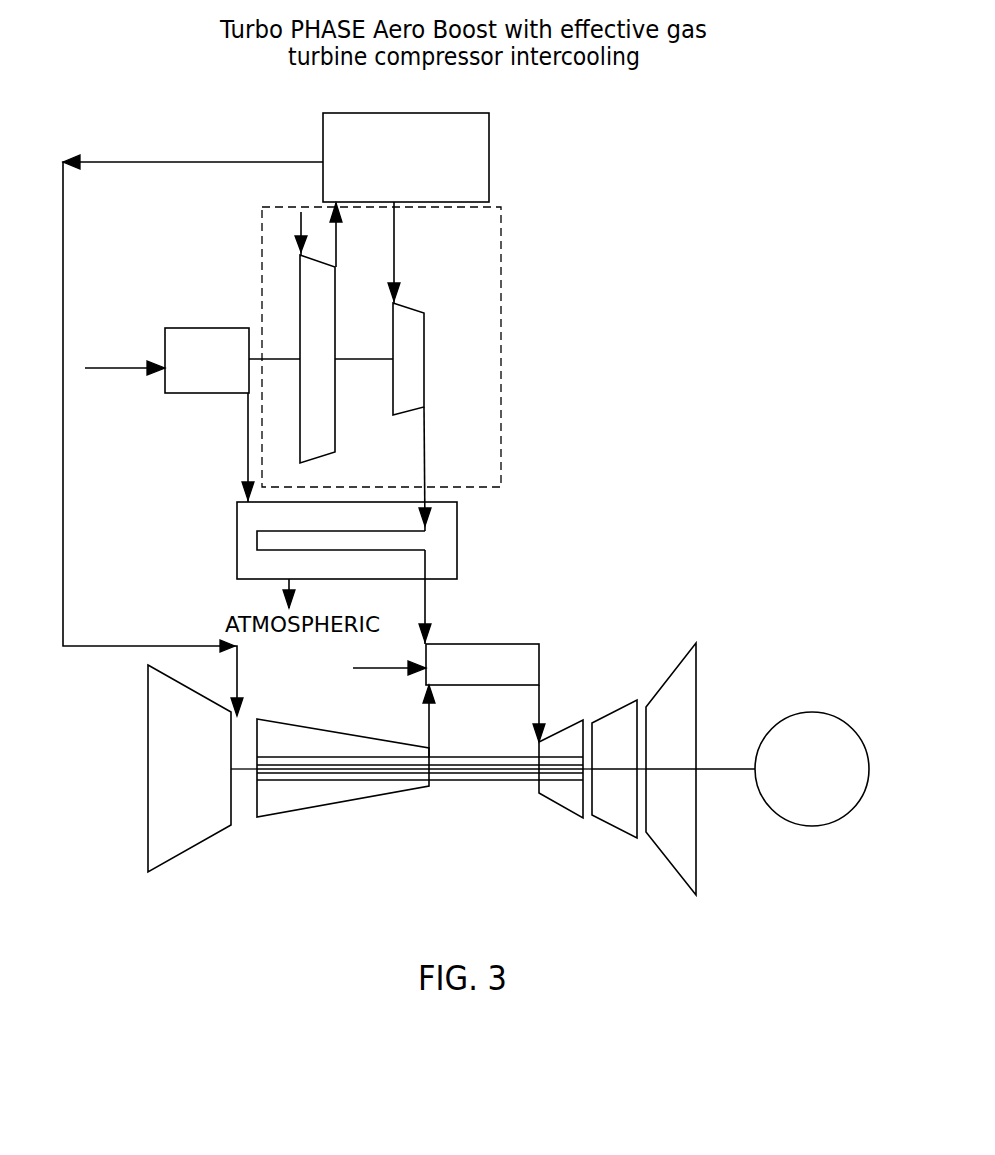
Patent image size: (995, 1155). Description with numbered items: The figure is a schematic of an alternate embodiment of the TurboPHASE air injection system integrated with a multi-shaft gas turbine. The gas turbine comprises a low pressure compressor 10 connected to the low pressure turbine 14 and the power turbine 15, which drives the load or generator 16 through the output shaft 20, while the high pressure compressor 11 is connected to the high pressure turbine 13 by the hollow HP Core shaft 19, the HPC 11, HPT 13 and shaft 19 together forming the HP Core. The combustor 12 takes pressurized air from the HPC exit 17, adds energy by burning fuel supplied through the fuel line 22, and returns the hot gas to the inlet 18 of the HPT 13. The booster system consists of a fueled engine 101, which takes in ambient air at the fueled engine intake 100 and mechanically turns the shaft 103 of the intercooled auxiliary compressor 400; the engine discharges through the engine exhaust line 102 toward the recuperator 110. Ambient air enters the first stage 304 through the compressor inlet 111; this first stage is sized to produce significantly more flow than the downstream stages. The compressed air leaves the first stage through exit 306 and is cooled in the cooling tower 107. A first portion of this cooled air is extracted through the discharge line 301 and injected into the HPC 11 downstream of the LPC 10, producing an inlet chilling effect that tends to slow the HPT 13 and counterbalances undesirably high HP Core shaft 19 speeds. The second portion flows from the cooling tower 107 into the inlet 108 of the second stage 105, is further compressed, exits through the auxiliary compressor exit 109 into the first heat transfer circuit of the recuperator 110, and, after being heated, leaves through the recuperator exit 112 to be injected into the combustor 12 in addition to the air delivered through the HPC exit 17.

The discharge line 301 is at (190, 162).
The cooling tower 107 is at (489, 145).
The auxiliary compressor 400 is at (503, 293).
The compressor inlet 111 is at (300, 215).
The exit of the first stage of the auxiliary compressor 306 is at (337, 237).
The inlet of the second stage 108 is at (394, 245).
The fueled engine 101 is at (193, 328).
The fueled engine intake 100 is at (112, 370).
The shaft 103 is at (270, 355).
The first stage of the auxiliary compressor 304 is at (337, 402).
The second stage of the auxiliary compressor 105 is at (427, 340).
The auxiliary compressor exit 109 is at (427, 435).
The engine exhaust line 102 is at (247, 422).
The recuperator 110 is at (457, 535).
The recuperator exit 112 is at (426, 590).
The fuel line 22 is at (377, 665).
The combustor 12 is at (482, 664).
The HPC exit 17 is at (427, 727).
The inlet of the HPT 18 is at (542, 698).
The low pressure compressor 10 is at (197, 845).
The high pressure compressor 11 is at (287, 813).
The HP Core shaft 19 is at (462, 755).
The high pressure turbine 13 is at (540, 795).
The low pressure turbine 14 is at (603, 823).
The power turbine 15 is at (668, 860).
The output shaft 20 is at (730, 772).
The load or generator 16 is at (812, 769).